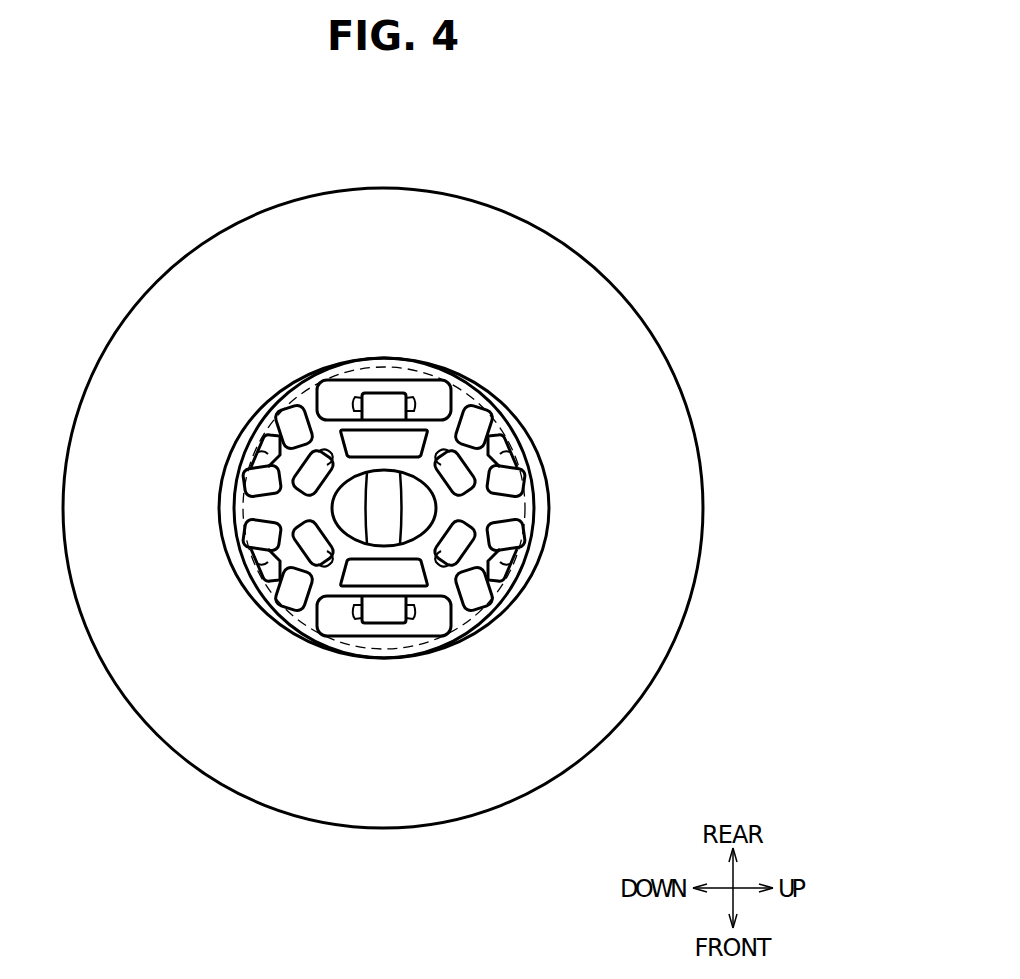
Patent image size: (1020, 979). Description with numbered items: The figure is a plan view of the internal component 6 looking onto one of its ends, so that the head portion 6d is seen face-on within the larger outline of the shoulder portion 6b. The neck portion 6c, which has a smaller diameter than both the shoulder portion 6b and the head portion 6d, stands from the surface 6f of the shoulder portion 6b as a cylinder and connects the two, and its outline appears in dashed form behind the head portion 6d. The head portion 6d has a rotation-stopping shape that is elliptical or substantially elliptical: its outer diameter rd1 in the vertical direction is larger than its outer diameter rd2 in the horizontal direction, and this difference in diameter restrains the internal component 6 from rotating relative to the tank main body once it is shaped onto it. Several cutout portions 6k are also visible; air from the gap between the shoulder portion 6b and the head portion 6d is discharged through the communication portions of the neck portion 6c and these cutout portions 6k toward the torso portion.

The internal component 6 is at (647, 207).
The shoulder portion 6b is at (705, 462).
The neck portion 6c is at (488, 614).
The head portion 6d is at (542, 552).
The surface of the shoulder portion 6f is at (195, 752).
The cutout portion 6k is at (313, 450).
The outer diameter of the head portion in the vertical direction rd1 is at (548, 463).
The outer diameter of the head portion in the horizontal direction rd2 is at (340, 657).